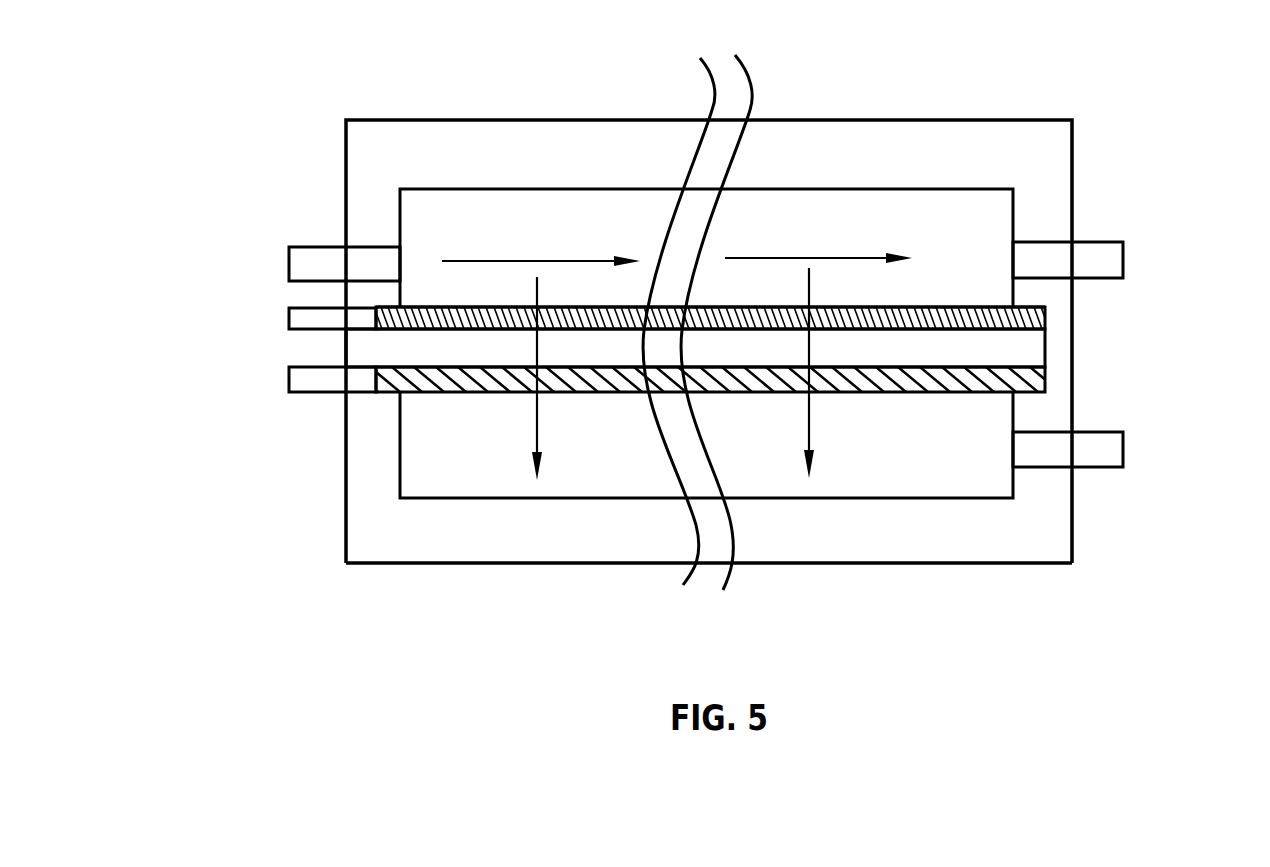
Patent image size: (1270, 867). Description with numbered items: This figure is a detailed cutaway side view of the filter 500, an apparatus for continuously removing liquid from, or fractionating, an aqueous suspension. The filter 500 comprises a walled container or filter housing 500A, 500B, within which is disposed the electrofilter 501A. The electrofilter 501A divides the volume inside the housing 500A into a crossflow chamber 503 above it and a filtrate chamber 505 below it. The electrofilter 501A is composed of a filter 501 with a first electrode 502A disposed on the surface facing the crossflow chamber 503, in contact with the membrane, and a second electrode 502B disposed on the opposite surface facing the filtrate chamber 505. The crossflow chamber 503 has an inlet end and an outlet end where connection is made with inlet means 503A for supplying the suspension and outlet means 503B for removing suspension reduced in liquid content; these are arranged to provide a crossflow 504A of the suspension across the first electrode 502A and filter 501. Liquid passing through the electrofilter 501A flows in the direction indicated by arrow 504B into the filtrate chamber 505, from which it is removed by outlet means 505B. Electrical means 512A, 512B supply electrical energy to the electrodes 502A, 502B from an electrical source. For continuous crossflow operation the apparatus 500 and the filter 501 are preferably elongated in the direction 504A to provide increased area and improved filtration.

The filter 500 is at (900, 112).
The filter housing 500A is at (483, 120).
The filter housing 500B is at (610, 563).
The filter 501 is at (915, 360).
The electrofilter 501A is at (930, 302).
The first electrode 502A is at (977, 303).
The second electrode 502B is at (970, 380).
The crossflow chamber 503 is at (915, 234).
The inlet means 503A is at (288, 263).
The outlet means 503B is at (1123, 258).
The crossflow 504A is at (528, 257).
The filtrate flow direction 504B is at (532, 420).
The filtrate chamber 505 is at (927, 466).
The outlet means 505B is at (1123, 447).
The electrical means 512A is at (288, 317).
The electrical means 512B is at (290, 380).